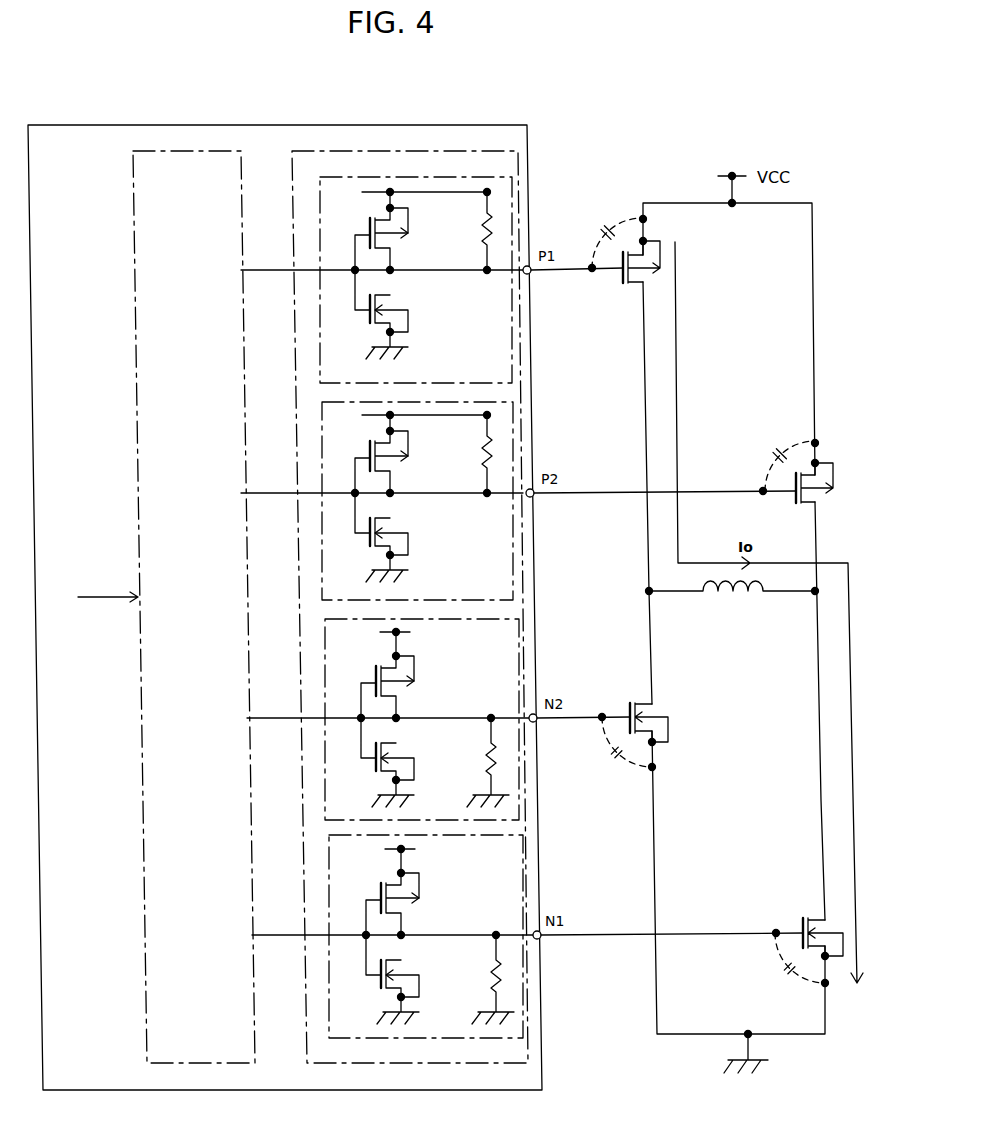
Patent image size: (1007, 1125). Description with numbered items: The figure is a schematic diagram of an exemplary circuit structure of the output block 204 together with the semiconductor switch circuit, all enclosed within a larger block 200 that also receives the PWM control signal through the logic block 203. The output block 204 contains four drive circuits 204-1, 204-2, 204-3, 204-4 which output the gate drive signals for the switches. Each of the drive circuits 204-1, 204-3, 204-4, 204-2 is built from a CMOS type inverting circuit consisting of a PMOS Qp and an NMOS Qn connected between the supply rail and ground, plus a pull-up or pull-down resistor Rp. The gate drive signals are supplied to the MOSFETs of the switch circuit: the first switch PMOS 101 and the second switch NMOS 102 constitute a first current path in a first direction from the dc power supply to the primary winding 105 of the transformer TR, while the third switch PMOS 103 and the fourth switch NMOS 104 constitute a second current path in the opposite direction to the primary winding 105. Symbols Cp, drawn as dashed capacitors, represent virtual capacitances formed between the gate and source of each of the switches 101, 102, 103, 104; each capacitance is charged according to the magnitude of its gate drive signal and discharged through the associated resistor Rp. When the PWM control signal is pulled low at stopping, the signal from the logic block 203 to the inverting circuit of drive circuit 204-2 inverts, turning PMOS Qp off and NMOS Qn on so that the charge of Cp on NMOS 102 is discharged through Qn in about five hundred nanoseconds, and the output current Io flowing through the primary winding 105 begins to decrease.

The switching amplifier / output circuit 200 is at (318, 118).
The logic block 203 is at (163, 149).
The output block 204 is at (350, 144).
The drive circuit 204-1 is at (345, 171).
The drive circuit 204-2 is at (396, 928).
The drive circuit 204-3 is at (387, 492).
The drive circuit 204-4 is at (392, 711).
The PMOS 101 is at (628, 246).
The NMOS 102 is at (800, 947).
The PMOS 103 is at (803, 466).
The NMOS 104 is at (636, 743).
The primary winding 105 is at (732, 612).